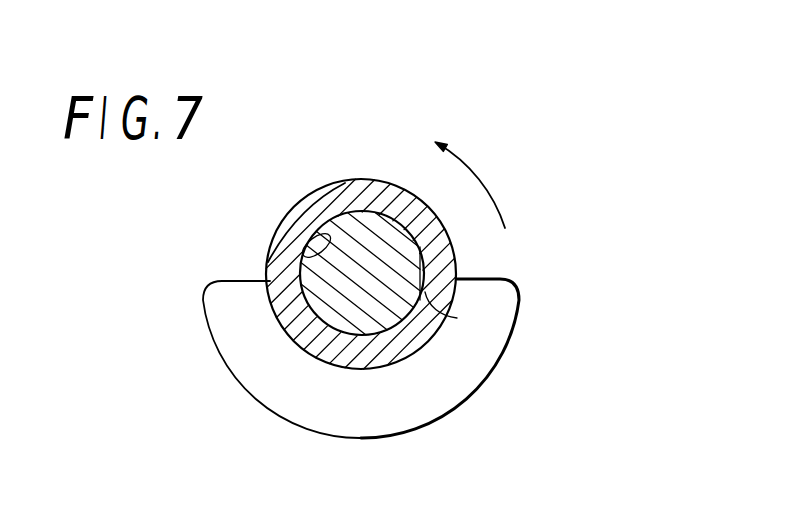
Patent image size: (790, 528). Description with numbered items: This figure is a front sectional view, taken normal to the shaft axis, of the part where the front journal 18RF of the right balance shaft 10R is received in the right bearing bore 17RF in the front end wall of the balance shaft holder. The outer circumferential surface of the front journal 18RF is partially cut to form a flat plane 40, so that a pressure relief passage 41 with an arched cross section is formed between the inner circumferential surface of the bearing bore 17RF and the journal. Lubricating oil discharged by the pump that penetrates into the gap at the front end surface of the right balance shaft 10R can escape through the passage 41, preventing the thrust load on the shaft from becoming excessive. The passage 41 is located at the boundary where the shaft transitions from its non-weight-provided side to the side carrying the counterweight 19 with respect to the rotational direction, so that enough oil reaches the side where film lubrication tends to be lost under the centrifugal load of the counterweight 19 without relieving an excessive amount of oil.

The right balance shaft 10R is at (275, 368).
The right bearing bore 17RF is at (304, 256).
The front journal 18RF is at (349, 226).
The counterweight 19 is at (413, 400).
The flat plane 40 is at (457, 318).
The pressure relief passage 41 is at (425, 268).